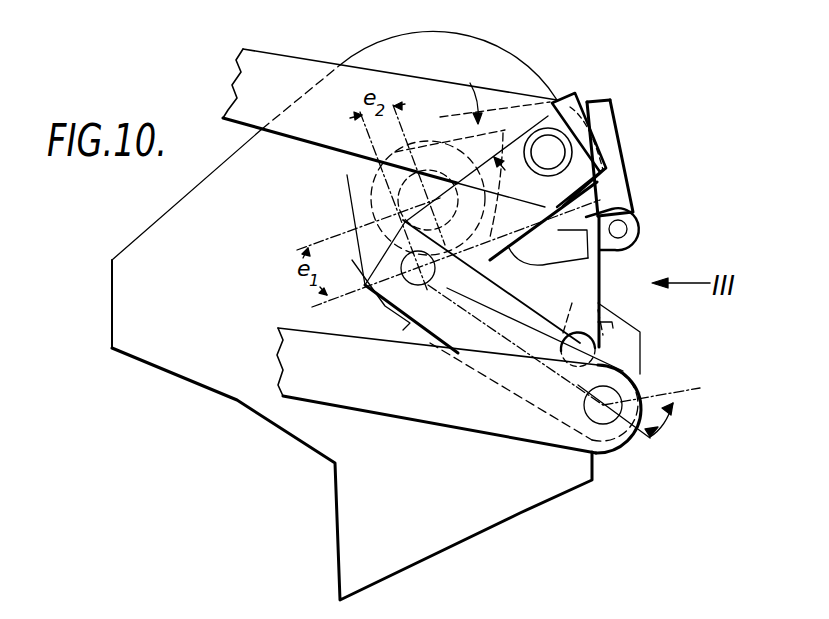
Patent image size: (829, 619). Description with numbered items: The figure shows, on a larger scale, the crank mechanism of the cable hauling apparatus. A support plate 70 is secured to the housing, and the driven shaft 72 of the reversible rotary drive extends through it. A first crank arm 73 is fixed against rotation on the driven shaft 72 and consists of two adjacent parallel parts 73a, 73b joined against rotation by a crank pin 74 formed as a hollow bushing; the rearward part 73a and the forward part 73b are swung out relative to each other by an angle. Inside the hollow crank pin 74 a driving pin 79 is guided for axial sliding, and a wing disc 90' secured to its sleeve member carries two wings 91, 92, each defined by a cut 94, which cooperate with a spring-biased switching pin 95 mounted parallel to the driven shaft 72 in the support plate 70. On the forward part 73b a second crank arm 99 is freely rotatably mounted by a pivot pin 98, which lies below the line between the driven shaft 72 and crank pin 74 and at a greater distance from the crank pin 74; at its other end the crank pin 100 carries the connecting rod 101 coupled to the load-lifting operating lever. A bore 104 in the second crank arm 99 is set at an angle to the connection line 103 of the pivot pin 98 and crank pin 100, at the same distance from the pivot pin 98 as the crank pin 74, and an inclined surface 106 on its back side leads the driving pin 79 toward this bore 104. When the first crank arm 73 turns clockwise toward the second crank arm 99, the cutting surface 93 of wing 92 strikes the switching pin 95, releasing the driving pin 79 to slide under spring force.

The support plate 70 is at (560, 468).
The driven shaft 72 is at (407, 193).
The first crank arm 73 is at (568, 92).
The rearward part of the first crank arm 73a is at (357, 175).
The forward part of the first crank arm 73b is at (353, 258).
The crank pin 74 is at (549, 150).
The driving pin 79 is at (540, 134).
The wing disc 90' is at (625, 158).
The wing 91 is at (613, 101).
The wing 92 is at (563, 253).
The cutting surface 93 is at (629, 219).
The cut 94 is at (600, 102).
The switching pin 95 is at (622, 232).
The pivot pin 98 is at (385, 308).
The second crank arm 99 is at (557, 300).
The crank pin 100 is at (615, 396).
The connecting rod 101 is at (442, 407).
The connection line 103 is at (660, 437).
The bore 104 is at (580, 350).
The inclined surface 106 is at (636, 318).